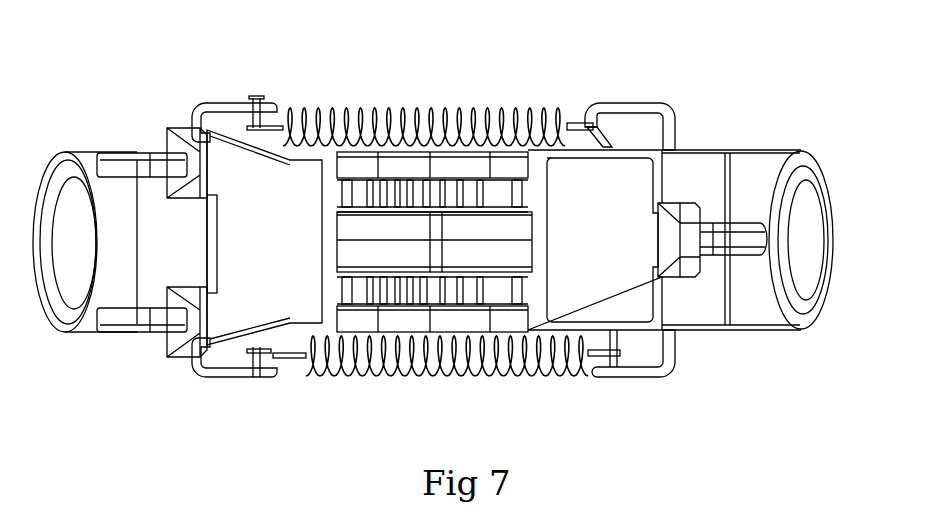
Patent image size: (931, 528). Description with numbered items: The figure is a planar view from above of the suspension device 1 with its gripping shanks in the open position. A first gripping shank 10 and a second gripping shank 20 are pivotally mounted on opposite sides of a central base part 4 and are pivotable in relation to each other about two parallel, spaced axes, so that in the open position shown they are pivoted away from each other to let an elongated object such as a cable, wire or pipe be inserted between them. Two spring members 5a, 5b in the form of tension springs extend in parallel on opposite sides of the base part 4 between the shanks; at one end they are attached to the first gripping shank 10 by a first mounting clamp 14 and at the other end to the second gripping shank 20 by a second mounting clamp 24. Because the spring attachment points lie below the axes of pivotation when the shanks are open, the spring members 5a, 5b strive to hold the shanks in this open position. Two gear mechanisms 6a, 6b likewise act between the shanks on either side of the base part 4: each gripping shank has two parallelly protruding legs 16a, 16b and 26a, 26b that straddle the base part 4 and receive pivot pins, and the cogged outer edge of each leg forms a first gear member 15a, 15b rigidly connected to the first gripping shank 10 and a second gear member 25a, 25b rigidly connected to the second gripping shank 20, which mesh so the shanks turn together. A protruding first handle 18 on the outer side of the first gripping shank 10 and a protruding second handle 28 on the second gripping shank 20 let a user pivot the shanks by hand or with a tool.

The suspension device 1 is at (433, 218).
The first gripping shank 10 is at (177, 215).
The first handle 18 is at (65, 153).
The first mounting clamp 14 is at (227, 107).
The spring member 5a is at (563, 373).
The spring member 5b is at (387, 107).
The first gear mechanism 6a is at (439, 339).
The second gear mechanism 6b is at (434, 137).
The leg 16a is at (365, 287).
The leg 16b is at (360, 187).
The first gear member 15a is at (420, 292).
The first gear member 15b is at (423, 190).
The second gear member 25a is at (445, 292).
The second gear member 25b is at (457, 188).
The leg 26a is at (510, 285).
The leg 26b is at (505, 200).
The base part 4 is at (523, 233).
The second mounting clamp 24 is at (627, 107).
The second gripping shank 20 is at (680, 198).
The second handle 28 is at (807, 162).